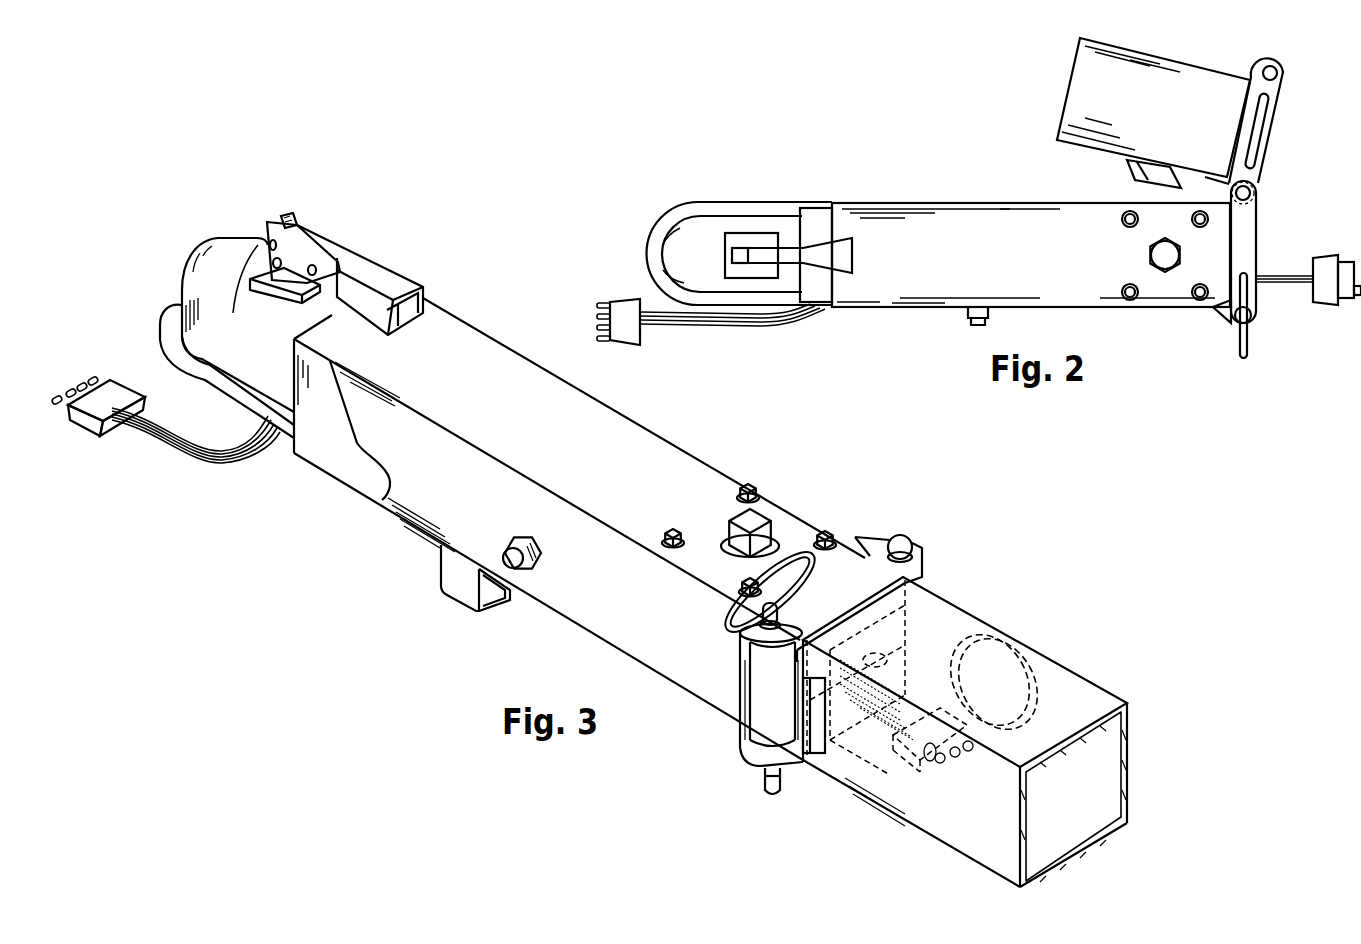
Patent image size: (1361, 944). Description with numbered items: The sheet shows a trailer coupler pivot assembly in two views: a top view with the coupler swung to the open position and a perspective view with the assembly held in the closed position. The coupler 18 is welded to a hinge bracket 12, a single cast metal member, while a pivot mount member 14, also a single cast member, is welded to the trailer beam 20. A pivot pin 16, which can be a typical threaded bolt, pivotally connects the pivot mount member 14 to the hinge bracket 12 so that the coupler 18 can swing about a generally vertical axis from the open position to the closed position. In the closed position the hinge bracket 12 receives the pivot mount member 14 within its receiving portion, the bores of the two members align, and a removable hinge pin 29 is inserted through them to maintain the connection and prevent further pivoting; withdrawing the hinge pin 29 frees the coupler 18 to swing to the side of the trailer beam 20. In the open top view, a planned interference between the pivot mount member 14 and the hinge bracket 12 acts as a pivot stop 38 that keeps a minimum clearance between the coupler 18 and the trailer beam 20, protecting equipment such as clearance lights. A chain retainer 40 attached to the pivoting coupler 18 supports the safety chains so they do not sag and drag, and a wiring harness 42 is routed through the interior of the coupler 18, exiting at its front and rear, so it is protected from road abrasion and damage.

In FIG. 3, the hinge bracket 12 is at (780, 765).
In FIG. 3, the pivot mount member 14 is at (768, 710).
In FIG. 3, the pivot pin 16 is at (903, 548).
In FIG. 3, the coupler 18 is at (464, 355).
In FIG. 2, the trailer beam 20 is at (1148, 108).
In FIG. 3, the trailer beam 20 is at (945, 812).
In FIG. 3, the hinge pin 29 is at (766, 795).
In FIG. 2, the pivot stop 38 is at (1130, 184).
In FIG. 3, the chain retainer 40 is at (463, 600).
In FIG. 2, the wiring harness 42 is at (1283, 283).
In FIG. 3, the wiring harness 42 is at (895, 690).